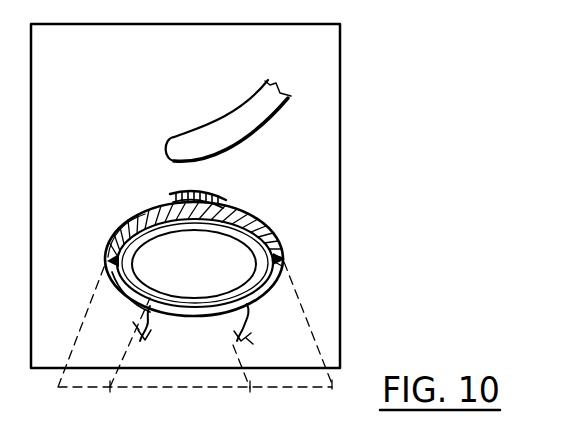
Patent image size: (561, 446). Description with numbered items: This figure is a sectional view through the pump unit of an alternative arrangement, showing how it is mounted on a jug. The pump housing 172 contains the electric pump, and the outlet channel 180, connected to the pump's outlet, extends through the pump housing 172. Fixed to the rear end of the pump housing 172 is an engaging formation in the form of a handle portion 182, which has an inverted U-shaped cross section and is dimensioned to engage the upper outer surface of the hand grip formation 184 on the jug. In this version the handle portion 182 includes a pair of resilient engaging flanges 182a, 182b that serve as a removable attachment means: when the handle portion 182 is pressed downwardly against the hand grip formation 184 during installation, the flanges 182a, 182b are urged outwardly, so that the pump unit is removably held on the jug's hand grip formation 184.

The pump housing 172 is at (352, 68).
The outlet channel 180 is at (262, 117).
The handle portion 182 is at (143, 225).
The resilient engaging flange 182a is at (118, 367).
The resilient engaging flange 182b is at (263, 366).
The hand grip formation 184 is at (193, 306).